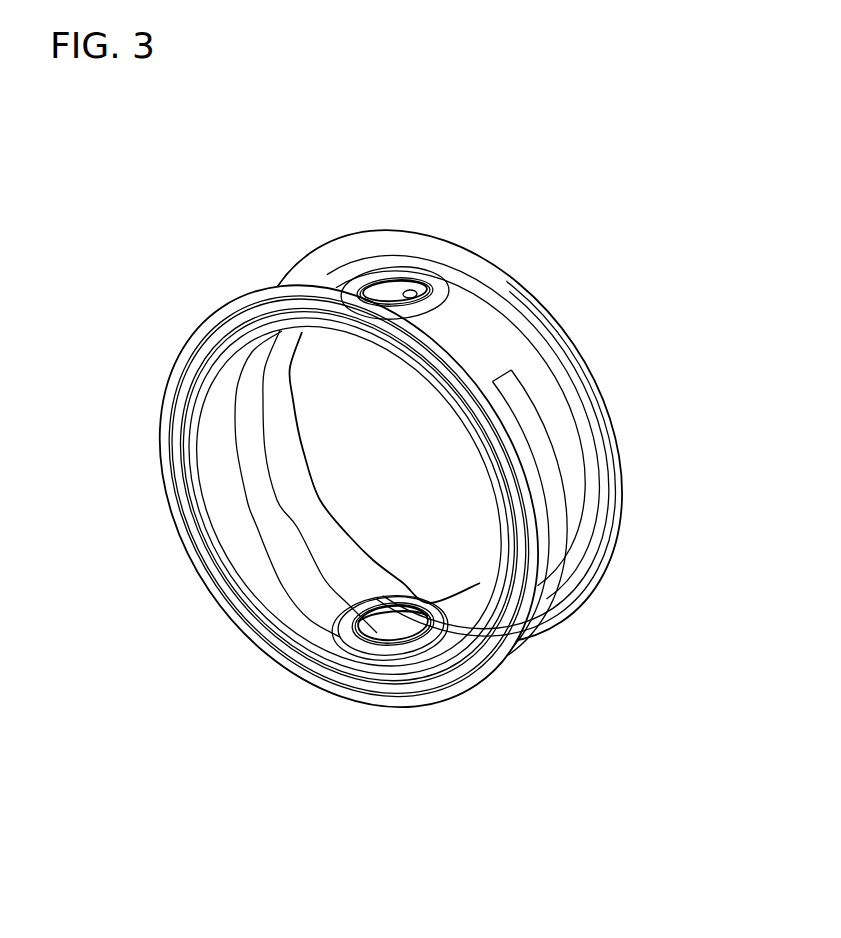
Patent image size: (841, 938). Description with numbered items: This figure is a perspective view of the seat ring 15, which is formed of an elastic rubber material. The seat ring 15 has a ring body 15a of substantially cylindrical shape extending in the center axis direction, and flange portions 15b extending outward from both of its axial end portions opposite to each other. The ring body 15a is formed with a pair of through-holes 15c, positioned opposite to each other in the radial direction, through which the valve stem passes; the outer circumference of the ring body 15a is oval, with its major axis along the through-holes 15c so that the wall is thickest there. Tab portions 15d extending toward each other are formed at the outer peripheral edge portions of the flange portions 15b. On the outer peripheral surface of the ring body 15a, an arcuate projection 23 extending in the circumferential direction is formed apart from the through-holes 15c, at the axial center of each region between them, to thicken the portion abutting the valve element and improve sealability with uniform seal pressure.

The seat ring 15 is at (540, 244).
The ring body 15a is at (498, 333).
The flange portion 15b is at (567, 598).
The through-hole 15c is at (413, 290).
The tab portion 15d is at (620, 558).
The arcuate projection 23 is at (548, 493).